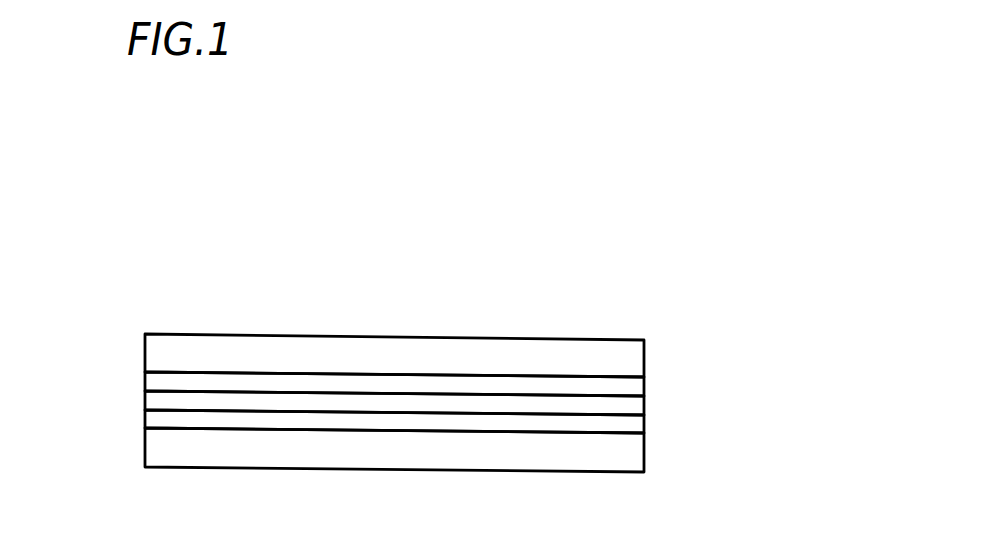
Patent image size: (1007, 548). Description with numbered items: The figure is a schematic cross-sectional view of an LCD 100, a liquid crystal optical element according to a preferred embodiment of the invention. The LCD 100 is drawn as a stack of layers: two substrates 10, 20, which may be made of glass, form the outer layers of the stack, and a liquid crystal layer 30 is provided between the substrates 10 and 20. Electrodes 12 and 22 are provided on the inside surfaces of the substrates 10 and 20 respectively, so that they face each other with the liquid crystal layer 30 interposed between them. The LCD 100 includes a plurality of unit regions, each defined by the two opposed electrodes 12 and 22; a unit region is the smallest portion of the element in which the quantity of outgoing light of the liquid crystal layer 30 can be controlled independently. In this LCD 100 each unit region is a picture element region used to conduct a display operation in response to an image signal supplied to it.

The LCD 100 is at (508, 304).
The substrate 20 is at (628, 360).
The electrode 22 is at (625, 387).
The liquid crystal layer 30 is at (632, 407).
The electrode 12 is at (633, 423).
The substrate 10 is at (623, 457).